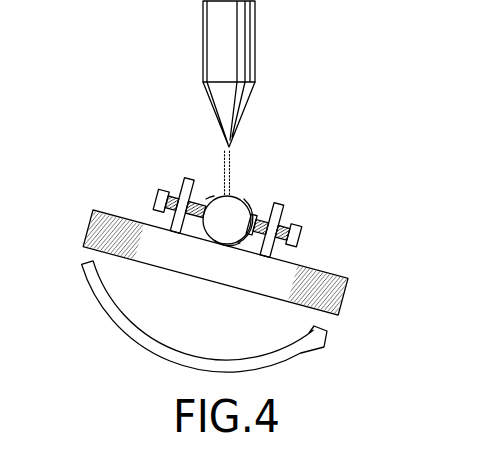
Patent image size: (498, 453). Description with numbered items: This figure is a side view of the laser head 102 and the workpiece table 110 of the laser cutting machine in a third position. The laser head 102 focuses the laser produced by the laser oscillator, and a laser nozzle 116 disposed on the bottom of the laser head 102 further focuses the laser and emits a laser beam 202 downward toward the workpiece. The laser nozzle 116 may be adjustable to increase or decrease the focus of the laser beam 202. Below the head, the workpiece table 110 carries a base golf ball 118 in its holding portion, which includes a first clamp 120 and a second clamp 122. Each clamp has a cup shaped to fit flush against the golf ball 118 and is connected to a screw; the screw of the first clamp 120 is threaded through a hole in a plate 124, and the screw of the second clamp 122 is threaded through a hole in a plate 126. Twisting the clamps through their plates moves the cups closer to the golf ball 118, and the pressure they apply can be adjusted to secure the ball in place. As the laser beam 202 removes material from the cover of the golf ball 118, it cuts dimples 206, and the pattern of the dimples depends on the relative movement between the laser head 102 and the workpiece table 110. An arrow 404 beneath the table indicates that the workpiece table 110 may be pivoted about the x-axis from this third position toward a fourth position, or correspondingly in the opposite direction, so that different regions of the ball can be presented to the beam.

The laser head 102 is at (202, 37).
The laser nozzle 116 is at (243, 117).
The laser beam 202 is at (237, 156).
The dimples 206 is at (210, 198).
The workpiece table 110 is at (341, 293).
The plate 124 is at (183, 177).
The plate 126 is at (284, 206).
The base golf ball 118 is at (240, 202).
The first clamp 120 is at (207, 230).
The second clamp 122 is at (240, 240).
The arrow 404 is at (304, 352).